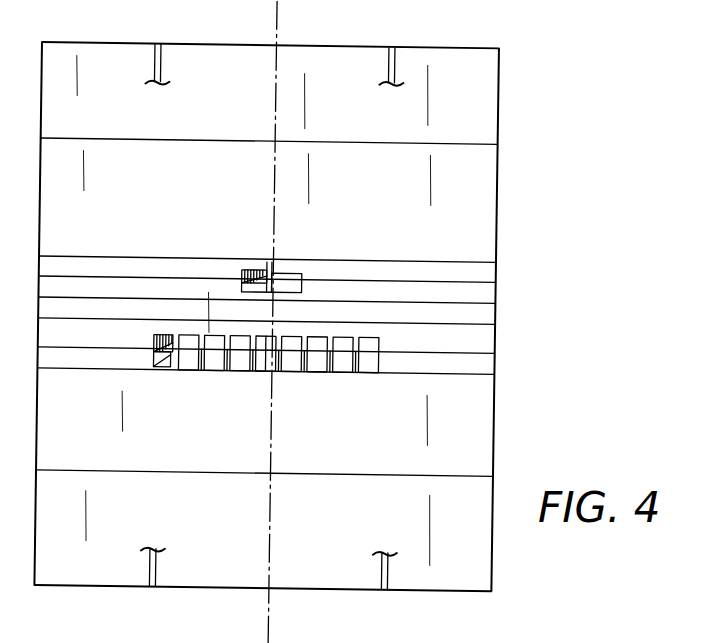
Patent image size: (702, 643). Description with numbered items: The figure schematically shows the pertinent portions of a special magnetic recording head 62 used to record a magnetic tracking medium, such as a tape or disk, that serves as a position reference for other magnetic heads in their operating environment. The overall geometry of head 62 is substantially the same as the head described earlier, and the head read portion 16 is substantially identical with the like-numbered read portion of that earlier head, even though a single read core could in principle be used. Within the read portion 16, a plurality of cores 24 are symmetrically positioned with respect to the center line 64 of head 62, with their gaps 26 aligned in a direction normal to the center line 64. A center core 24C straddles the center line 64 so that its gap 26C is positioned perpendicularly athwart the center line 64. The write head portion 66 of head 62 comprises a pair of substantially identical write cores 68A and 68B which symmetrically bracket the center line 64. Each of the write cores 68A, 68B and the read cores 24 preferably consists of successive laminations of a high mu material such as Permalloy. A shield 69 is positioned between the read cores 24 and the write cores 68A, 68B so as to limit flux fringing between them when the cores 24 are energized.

The head read portion 16 is at (478, 410).
The cores 24 is at (160, 338).
The center core 24C is at (275, 340).
The gaps 26 is at (165, 351).
The gap 26C is at (266, 370).
The recording head 62 is at (435, 42).
The center line 64 is at (281, 27).
The write head portion 66 is at (483, 222).
The write core 68A is at (257, 267).
The write core 68B is at (289, 268).
The shield 69 is at (483, 316).